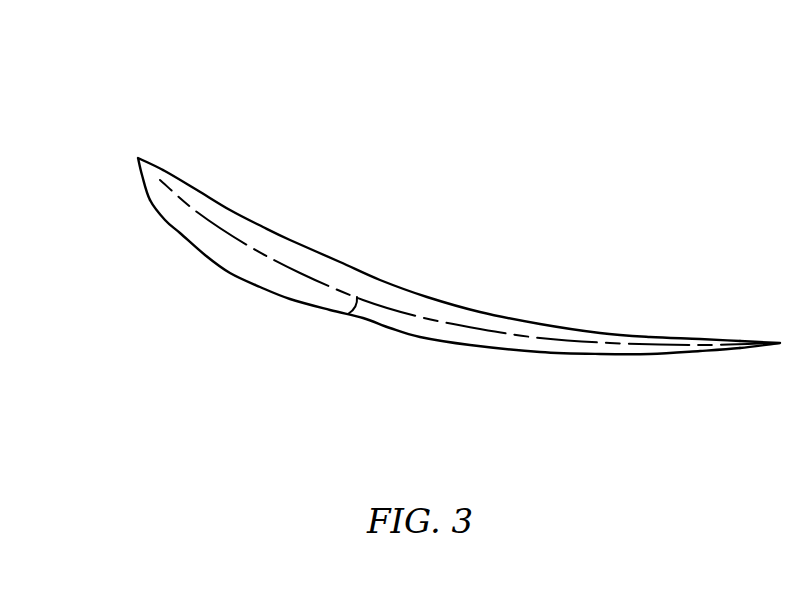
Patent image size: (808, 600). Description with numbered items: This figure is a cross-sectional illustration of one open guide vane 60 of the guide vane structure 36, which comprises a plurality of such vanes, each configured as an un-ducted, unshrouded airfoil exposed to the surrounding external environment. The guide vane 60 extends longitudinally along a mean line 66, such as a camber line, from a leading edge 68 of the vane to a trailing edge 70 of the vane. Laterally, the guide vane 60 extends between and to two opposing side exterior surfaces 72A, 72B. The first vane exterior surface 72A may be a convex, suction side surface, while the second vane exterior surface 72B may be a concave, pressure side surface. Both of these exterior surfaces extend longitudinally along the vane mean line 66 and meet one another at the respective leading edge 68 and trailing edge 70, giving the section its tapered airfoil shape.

The guide vane structure 36 is at (469, 117).
The open guide vane 60 is at (378, 238).
The mean line 66 is at (336, 318).
The leading edge 68 is at (138, 158).
The trailing edge 70 is at (780, 343).
The first vane exterior surface 72A is at (418, 337).
The second vane exterior surface 72B is at (422, 294).